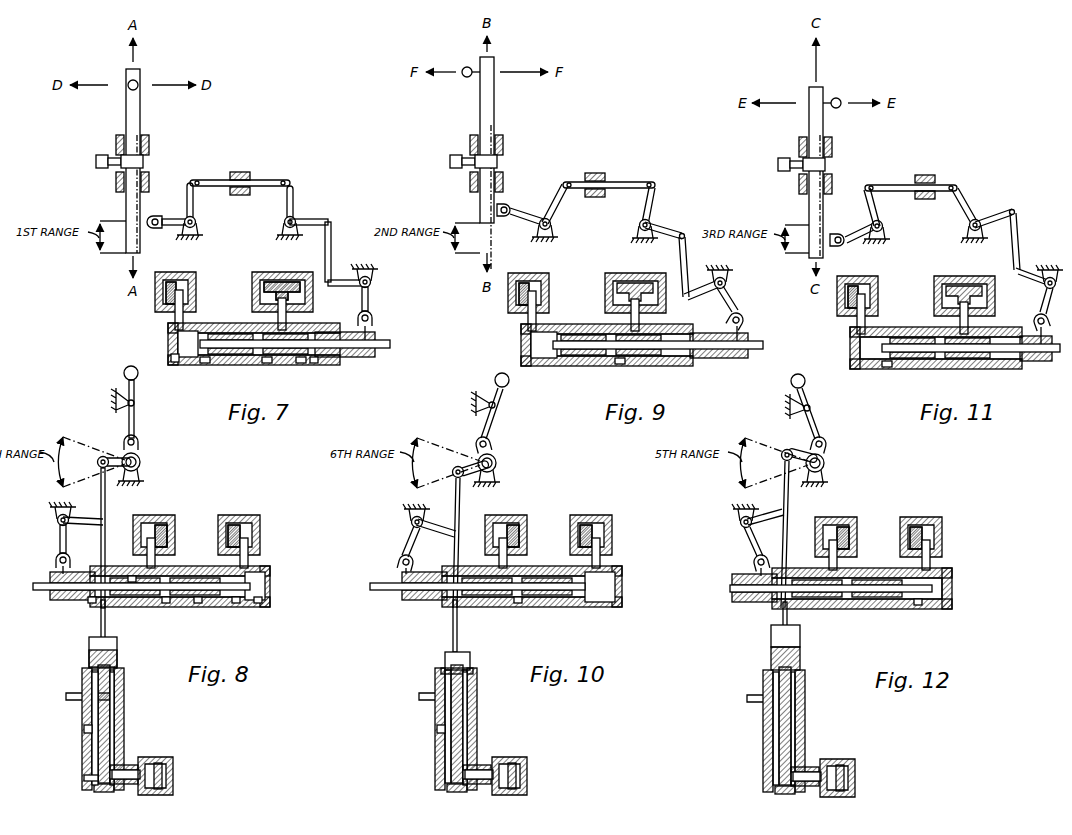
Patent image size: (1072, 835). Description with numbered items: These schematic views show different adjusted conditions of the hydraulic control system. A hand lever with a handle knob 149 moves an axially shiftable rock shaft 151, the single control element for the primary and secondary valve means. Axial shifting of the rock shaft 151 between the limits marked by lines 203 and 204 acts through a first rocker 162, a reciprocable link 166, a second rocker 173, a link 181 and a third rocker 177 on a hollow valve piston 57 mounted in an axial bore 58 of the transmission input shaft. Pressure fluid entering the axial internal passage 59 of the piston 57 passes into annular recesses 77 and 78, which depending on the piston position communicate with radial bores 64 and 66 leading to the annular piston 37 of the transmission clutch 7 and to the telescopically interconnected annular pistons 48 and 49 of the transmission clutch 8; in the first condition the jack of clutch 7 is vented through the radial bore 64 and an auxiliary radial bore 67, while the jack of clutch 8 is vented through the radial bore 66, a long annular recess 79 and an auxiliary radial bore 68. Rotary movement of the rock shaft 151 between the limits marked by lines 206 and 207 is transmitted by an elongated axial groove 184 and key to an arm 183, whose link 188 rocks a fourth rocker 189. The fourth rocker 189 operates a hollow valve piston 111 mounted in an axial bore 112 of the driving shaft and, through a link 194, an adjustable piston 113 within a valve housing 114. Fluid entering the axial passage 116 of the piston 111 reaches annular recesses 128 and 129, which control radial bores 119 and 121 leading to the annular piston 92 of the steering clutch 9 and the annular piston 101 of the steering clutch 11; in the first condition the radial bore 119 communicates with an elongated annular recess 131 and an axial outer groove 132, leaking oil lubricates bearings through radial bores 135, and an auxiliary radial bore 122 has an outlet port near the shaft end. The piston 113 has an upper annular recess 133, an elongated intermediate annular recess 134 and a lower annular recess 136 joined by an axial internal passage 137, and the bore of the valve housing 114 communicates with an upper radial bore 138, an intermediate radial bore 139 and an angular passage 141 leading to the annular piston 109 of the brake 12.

In FIG. 7, the transmission clutch 7 is at (186, 274).
In FIG. 9, the transmission clutch 7 is at (533, 283).
In FIG. 11, the transmission clutch 7 is at (860, 286).
In FIG. 7, the transmission clutch 8 is at (263, 273).
In FIG. 9, the transmission clutch 8 is at (635, 282).
In FIG. 11, the transmission clutch 8 is at (964, 285).
In FIG. 8, the steering clutch 9 is at (150, 515).
In FIG. 10, the steering clutch 9 is at (506, 524).
In FIG. 12, the steering clutch 9 is at (836, 526).
In FIG. 8, the steering clutch 11 is at (239, 515).
In FIG. 10, the steering clutch 11 is at (594, 523).
In FIG. 12, the steering clutch 11 is at (924, 525).
In FIG. 8, the brake 12 is at (185, 751).
In FIG. 10, the brake 12 is at (519, 765).
In FIG. 12, the brake 12 is at (848, 767).
In FIG. 7, the annular piston 37 is at (175, 275).
In FIG. 7, the annular piston 48 is at (264, 292).
In FIG. 7, the annular piston 49 is at (292, 286).
In FIG. 7, the hollow piston 57 is at (380, 340).
In FIG. 9, the hollow piston 57 is at (658, 364).
In FIG. 11, the hollow piston 57 is at (971, 367).
In FIG. 7, the axial bore 58 is at (174, 365).
In FIG. 7, the axial internal passage 59 is at (358, 358).
In FIG. 7, the radial bore 64 is at (185, 321).
In FIG. 11, the radial bore 64 is at (882, 314).
In FIG. 7, the radial bore 66 is at (290, 318).
In FIG. 9, the radial bore 66 is at (664, 315).
In FIG. 7, the auxiliary radial bore 67 is at (170, 343).
In FIG. 7, the auxiliary radial bore 68 is at (298, 367).
In FIG. 7, the annular recess 77 is at (205, 365).
In FIG. 11, the annular recess 77 is at (876, 379).
In FIG. 7, the annular recess 78 is at (268, 365).
In FIG. 9, the annular recess 78 is at (627, 376).
In FIG. 7, the long annular recess 79 is at (312, 365).
In FIG. 8, the annular piston 92 is at (167, 526).
In FIG. 8, the annular piston 101 is at (228, 550).
In FIG. 8, the annular piston 109 is at (168, 780).
In FIG. 8, the hollow piston 111 is at (60, 600).
In FIG. 10, the hollow piston 111 is at (477, 602).
In FIG. 8, the axial bore 112 is at (258, 605).
In FIG. 8, the piston 113 is at (118, 655).
In FIG. 10, the piston 113 is at (477, 659).
In FIG. 12, the piston 113 is at (807, 647).
In FIG. 8, the valve housing 114 is at (124, 680).
In FIG. 10, the valve housing 114 is at (477, 728).
In FIG. 12, the valve housing 114 is at (809, 730).
In FIG. 8, the axial passage 116 is at (56, 580).
In FIG. 8, the radial bore 119 is at (134, 553).
In FIG. 10, the radial bore 119 is at (484, 553).
In FIG. 8, the radial bore 121 is at (256, 560).
In FIG. 12, the radial bore 121 is at (953, 555).
In FIG. 8, the auxiliary radial bore 122 is at (268, 586).
In FIG. 8, the annular recess 128 is at (165, 604).
In FIG. 10, the annular recess 128 is at (506, 613).
In FIG. 8, the annular recess 129 is at (235, 605).
In FIG. 12, the annular recess 129 is at (929, 616).
In FIG. 8, the elongated annular recess 131 is at (126, 570).
In FIG. 8, the axial outer groove 132 is at (90, 604).
In FIG. 8, the upper annular recess 133 is at (124, 697).
In FIG. 8, the intermediate annular recess 134 is at (114, 722).
In FIG. 10, the intermediate annular recess 134 is at (490, 728).
In FIG. 8, the radial bores 135 is at (197, 611).
In FIG. 8, the lower annular recess 136 is at (92, 775).
In FIG. 8, the axial internal passage 137 is at (92, 740).
In FIG. 8, the upper radial bore 138 is at (75, 694).
In FIG. 10, the upper radial bore 138 is at (431, 687).
In FIG. 12, the upper radial bore 138 is at (751, 688).
In FIG. 8, the intermediate radial bore 139 is at (82, 728).
In FIG. 10, the intermediate radial bore 139 is at (428, 725).
In FIG. 8, the angular passage 141 is at (130, 765).
In FIG. 10, the angular passage 141 is at (490, 760).
In FIG. 12, the angular passage 141 is at (818, 762).
In FIG. 7, the handle knob 149 is at (139, 83).
In FIG. 9, the handle knob 149 is at (464, 78).
In FIG. 11, the handle knob 149 is at (840, 101).
In FIG. 7, the rock shaft 151 is at (141, 118).
In FIG. 9, the rock shaft 151 is at (495, 114).
In FIG. 11, the rock shaft 151 is at (826, 131).
In FIG. 8, the rock shaft 151 is at (140, 459).
In FIG. 10, the rock shaft 151 is at (496, 459).
In FIG. 12, the rock shaft 151 is at (824, 461).
In FIG. 7, the first rocker 162 is at (194, 212).
In FIG. 7, the link 166 is at (269, 179).
In FIG. 7, the second rocker 173 is at (294, 201).
In FIG. 7, the third rocker 177 is at (370, 301).
In FIG. 7, the link 181 is at (331, 257).
In FIG. 7, the arm 183 is at (96, 162).
In FIG. 9, the arm 183 is at (450, 162).
In FIG. 11, the arm 183 is at (778, 164).
In FIG. 8, the arm 183 is at (124, 445).
In FIG. 7, the axial groove 184 is at (150, 160).
In FIG. 8, the link 188 is at (105, 506).
In FIG. 8, the fourth rocker 189 is at (58, 535).
In FIG. 8, the link 194 is at (106, 618).
In FIG. 7, the line 203 is at (109, 221).
In FIG. 9, the line 203 is at (462, 223).
In FIG. 11, the line 203 is at (792, 225).
In FIG. 7, the line 204 is at (106, 253).
In FIG. 9, the line 204 is at (458, 253).
In FIG. 11, the line 204 is at (788, 253).
In FIG. 8, the line 206 is at (78, 437).
In FIG. 10, the line 206 is at (446, 440).
In FIG. 12, the line 206 is at (766, 440).
In FIG. 8, the line 207 is at (66, 486).
In FIG. 10, the line 207 is at (420, 486).
In FIG. 12, the line 207 is at (744, 486).